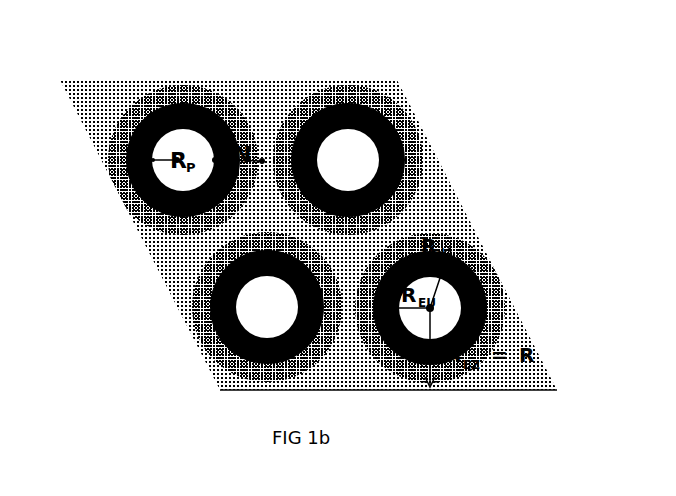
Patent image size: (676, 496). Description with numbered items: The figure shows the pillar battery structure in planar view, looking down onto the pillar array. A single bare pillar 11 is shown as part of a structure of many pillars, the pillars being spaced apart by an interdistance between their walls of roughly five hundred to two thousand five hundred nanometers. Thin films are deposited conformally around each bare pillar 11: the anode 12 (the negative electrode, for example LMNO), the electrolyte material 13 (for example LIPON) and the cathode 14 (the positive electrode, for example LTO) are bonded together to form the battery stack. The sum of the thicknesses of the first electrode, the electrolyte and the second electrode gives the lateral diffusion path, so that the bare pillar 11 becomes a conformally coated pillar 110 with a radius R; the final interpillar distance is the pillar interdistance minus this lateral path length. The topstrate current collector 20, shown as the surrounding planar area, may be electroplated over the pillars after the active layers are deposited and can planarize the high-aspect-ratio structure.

The topstrate current collector 20 is at (99, 80).
The cathode 14 is at (418, 132).
The anode 12 is at (483, 252).
The pillar 11 is at (260, 303).
The electrolyte material 13 is at (192, 337).
The conformally coated pillar 110 is at (437, 392).